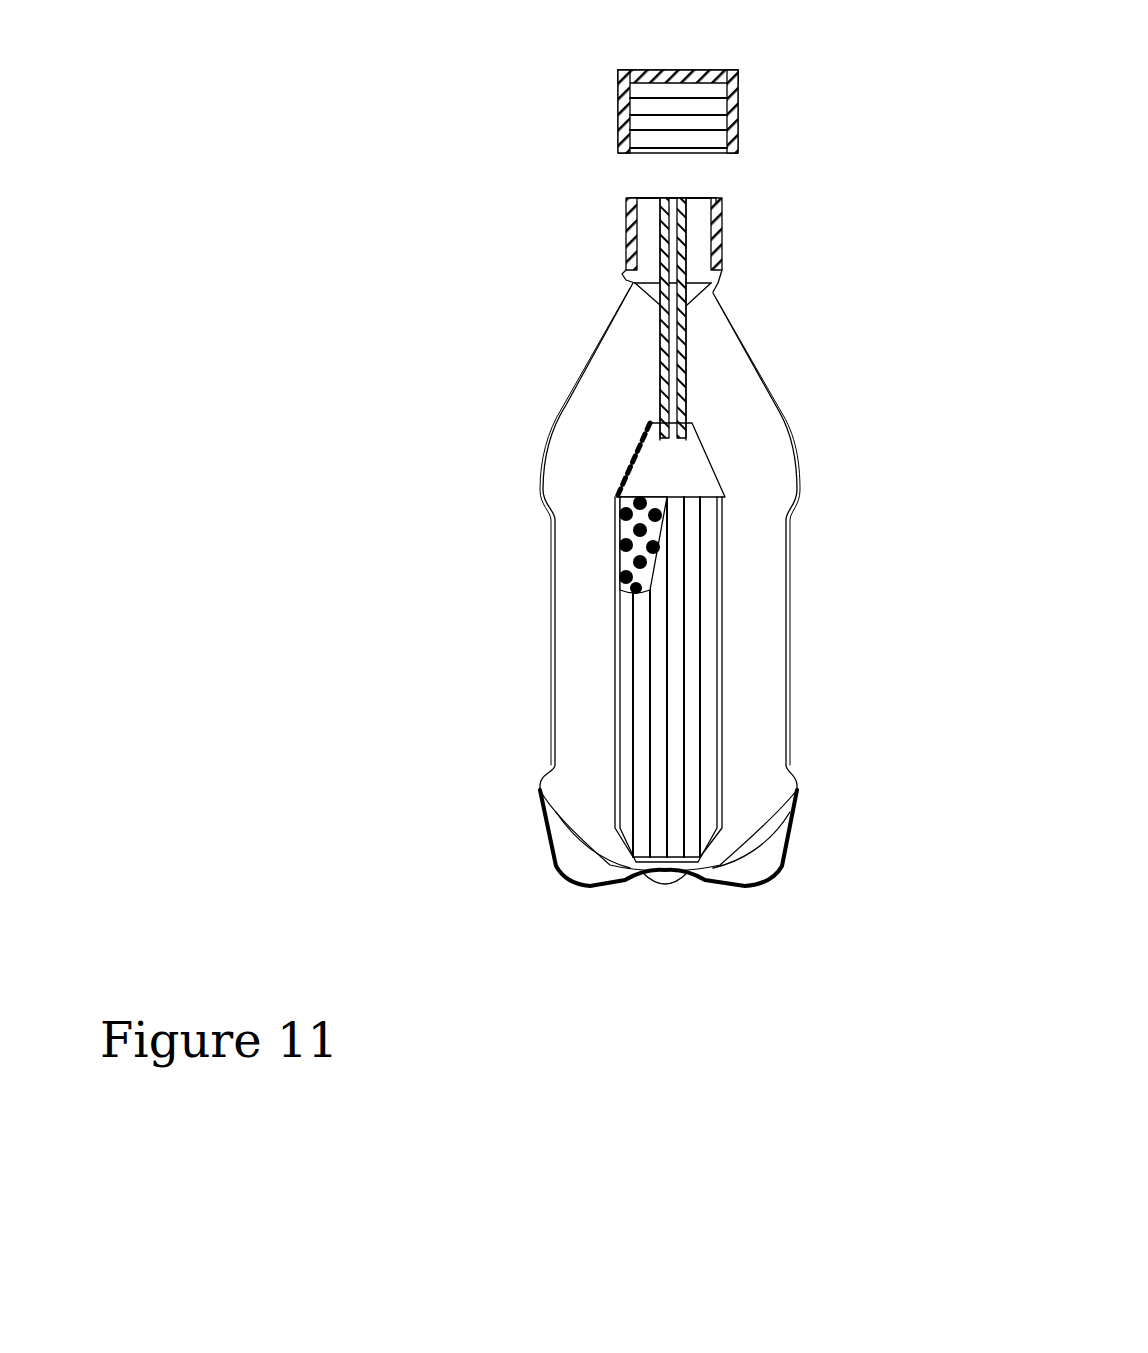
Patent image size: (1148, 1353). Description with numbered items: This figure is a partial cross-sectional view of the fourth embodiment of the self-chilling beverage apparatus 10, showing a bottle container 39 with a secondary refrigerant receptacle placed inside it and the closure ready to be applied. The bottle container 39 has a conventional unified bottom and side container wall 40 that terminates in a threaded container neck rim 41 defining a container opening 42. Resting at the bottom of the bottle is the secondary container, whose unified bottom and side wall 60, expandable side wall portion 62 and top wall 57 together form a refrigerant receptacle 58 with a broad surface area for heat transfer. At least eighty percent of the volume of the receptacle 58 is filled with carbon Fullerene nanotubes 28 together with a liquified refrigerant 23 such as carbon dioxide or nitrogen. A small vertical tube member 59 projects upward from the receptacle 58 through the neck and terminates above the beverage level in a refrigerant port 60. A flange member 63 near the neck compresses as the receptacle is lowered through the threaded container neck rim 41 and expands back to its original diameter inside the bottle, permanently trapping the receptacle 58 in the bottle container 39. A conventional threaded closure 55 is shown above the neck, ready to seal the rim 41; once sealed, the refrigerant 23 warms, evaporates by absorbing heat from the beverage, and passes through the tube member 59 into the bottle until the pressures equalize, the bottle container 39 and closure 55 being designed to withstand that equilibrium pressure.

The apparatus 10 is at (860, 60).
The threaded closure 55 is at (740, 115).
The threaded container neck rim 41 is at (716, 202).
The container opening 42 is at (647, 222).
The flange member 63 is at (714, 262).
The unified bottom and side wall 60 is at (671, 198).
The vertical tube member 59 is at (661, 338).
The top wall 57 is at (669, 493).
The refrigerant receptacle 58 is at (728, 462).
The expandable side wall portion 62 is at (705, 672).
The carbon Fullerene nanotubes 28 is at (622, 500).
The liquified refrigerant 23 is at (637, 592).
The bottle container 39 is at (553, 667).
The unified bottom and side container wall 40 is at (797, 793).